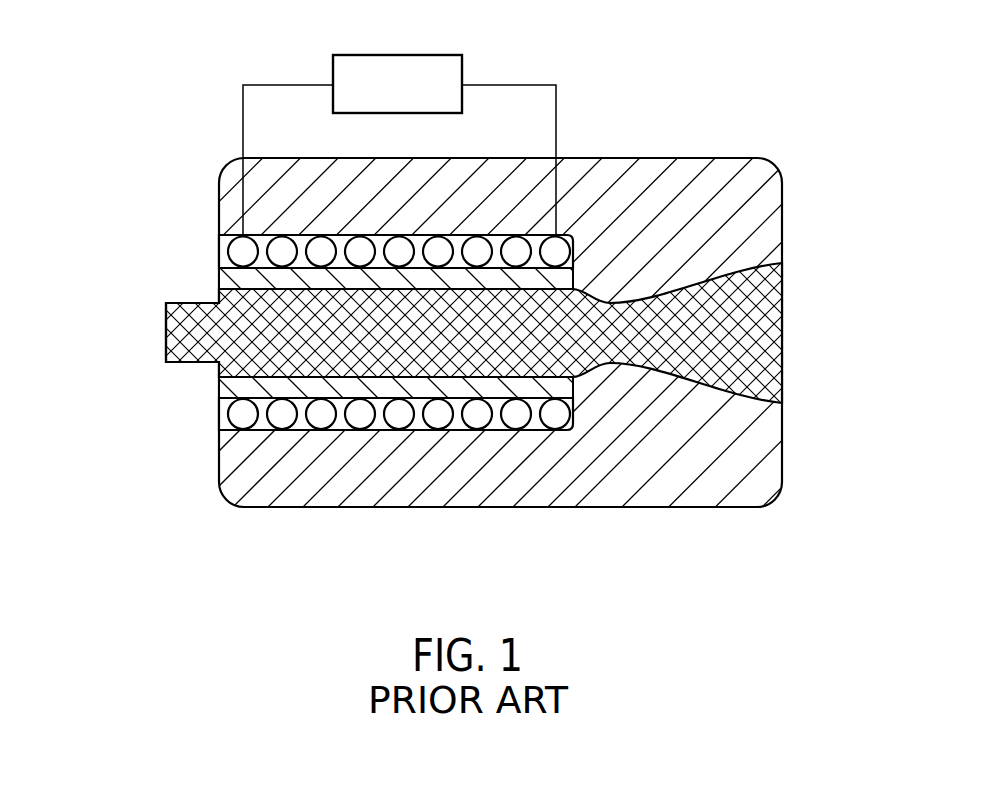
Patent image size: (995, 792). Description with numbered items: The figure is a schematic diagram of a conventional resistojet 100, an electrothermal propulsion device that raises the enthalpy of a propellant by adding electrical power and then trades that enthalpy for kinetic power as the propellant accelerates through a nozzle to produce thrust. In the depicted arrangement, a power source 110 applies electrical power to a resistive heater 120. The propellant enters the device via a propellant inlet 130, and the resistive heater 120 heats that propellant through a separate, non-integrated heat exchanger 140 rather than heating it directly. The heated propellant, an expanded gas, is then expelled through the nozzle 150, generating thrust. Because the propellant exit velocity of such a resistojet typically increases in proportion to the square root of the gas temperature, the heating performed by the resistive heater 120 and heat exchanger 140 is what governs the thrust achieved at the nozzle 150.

The conventional resistojet 100 is at (170, 87).
The power source 110 is at (418, 93).
The resistive heater 120 is at (317, 422).
The propellant inlet 130 is at (154, 338).
The heat exchanger 140 is at (493, 393).
The nozzle 150 is at (783, 305).